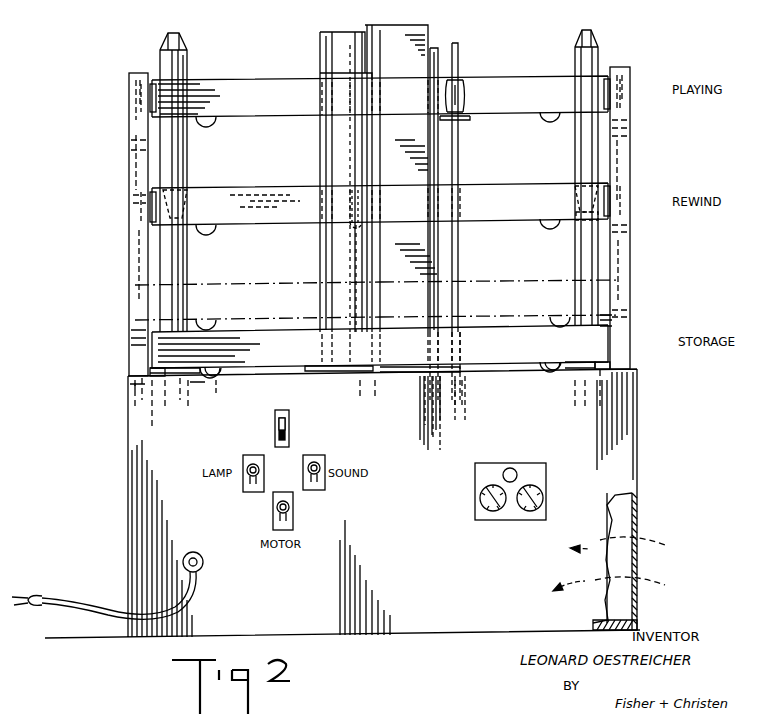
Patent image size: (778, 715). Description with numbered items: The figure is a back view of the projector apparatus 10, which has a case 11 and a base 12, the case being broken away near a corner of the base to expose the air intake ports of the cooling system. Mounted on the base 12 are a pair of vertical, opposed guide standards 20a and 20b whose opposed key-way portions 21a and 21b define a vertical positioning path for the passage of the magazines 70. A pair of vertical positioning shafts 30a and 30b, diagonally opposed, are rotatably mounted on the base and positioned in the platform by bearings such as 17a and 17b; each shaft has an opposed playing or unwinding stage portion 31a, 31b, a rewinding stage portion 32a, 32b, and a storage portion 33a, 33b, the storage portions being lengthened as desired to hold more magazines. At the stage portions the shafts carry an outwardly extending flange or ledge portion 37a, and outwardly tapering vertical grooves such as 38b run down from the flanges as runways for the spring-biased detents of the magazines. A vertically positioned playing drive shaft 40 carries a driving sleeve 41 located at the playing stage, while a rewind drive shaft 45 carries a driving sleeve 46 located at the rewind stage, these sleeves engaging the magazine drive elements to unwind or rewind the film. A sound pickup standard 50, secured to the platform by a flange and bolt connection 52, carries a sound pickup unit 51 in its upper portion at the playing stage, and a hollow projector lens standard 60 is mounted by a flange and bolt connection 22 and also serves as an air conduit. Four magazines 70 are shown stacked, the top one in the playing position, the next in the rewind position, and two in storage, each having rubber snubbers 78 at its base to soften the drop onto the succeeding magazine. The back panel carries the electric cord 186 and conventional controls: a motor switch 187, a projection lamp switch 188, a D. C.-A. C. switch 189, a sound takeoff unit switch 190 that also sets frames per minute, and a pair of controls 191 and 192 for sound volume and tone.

The projector apparatus 10 is at (648, 437).
The case 11 is at (640, 597).
The base 12 is at (640, 622).
The bearing 17a is at (150, 372).
The bearing 17b is at (612, 366).
The guide standard 20a is at (148, 154).
The guide standard 20b is at (628, 146).
The key-way portion 21a is at (152, 93).
The key-way portion 21b is at (608, 82).
The flange and bolt connection 22 is at (436, 375).
The vertical positioning shaft 30a is at (190, 264).
The vertical positioning shaft 30b is at (588, 270).
The playing or unwinding stage portion 31a is at (148, 115).
The playing or unwinding stage portion 31b is at (660, 102).
The rewinding stage portion 32a is at (148, 213).
The rewinding stage portion 32b is at (660, 205).
The storage portion 33a is at (160, 348).
The storage portion 33b is at (612, 320).
The flange or ledge portion 37a is at (183, 220).
The outwardly tapering vertical groove 38b is at (576, 130).
The playing drive shaft 40 is at (441, 143).
The driving sleeve 41 is at (463, 93).
The rewind drive shaft 45 is at (350, 245).
The driving sleeve 46 is at (348, 208).
The sound pickup standard 50 is at (340, 156).
The sound pickup unit 51 is at (322, 82).
The flange and bolt connection 52 is at (306, 376).
The projector lens standard 60 is at (420, 246).
The magazine 70 is at (545, 98).
The rubber snubber 78 is at (215, 380).
The electric cord 186 is at (195, 580).
The motor switch 187 is at (289, 509).
The projection lamp switch 188 is at (266, 460).
The D. C.-A. C. switch 189 is at (290, 430).
The sound takeoff unit switch 190 is at (306, 470).
The sound volume control 191 is at (493, 512).
The sound tone control 192 is at (532, 512).